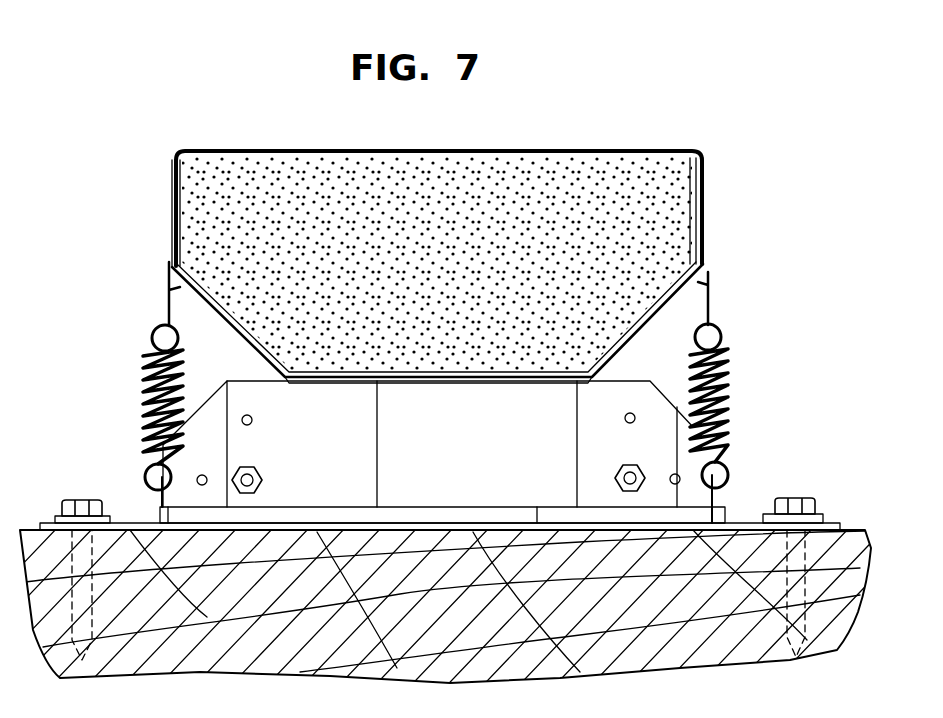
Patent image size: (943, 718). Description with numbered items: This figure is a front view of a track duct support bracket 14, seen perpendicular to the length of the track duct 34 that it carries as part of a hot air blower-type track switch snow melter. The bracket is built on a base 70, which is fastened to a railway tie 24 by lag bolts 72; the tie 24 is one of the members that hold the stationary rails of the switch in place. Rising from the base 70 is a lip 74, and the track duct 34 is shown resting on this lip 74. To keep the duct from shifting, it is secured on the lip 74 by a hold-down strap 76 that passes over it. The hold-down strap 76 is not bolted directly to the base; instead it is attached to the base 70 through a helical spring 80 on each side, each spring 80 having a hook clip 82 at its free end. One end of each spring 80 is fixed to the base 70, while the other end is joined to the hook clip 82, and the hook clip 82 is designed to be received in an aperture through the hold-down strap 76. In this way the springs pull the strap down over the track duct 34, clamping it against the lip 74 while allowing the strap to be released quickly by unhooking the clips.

The track duct support bracket 14 is at (713, 142).
The track duct 34 is at (475, 200).
The hold-down strap 76 is at (705, 204).
The lip 74 is at (593, 374).
The helical spring 80 is at (148, 395).
The hook clip 82 is at (166, 304).
The base 70 is at (738, 525).
The lag bolts 72 is at (82, 500).
The tie 24 is at (712, 650).